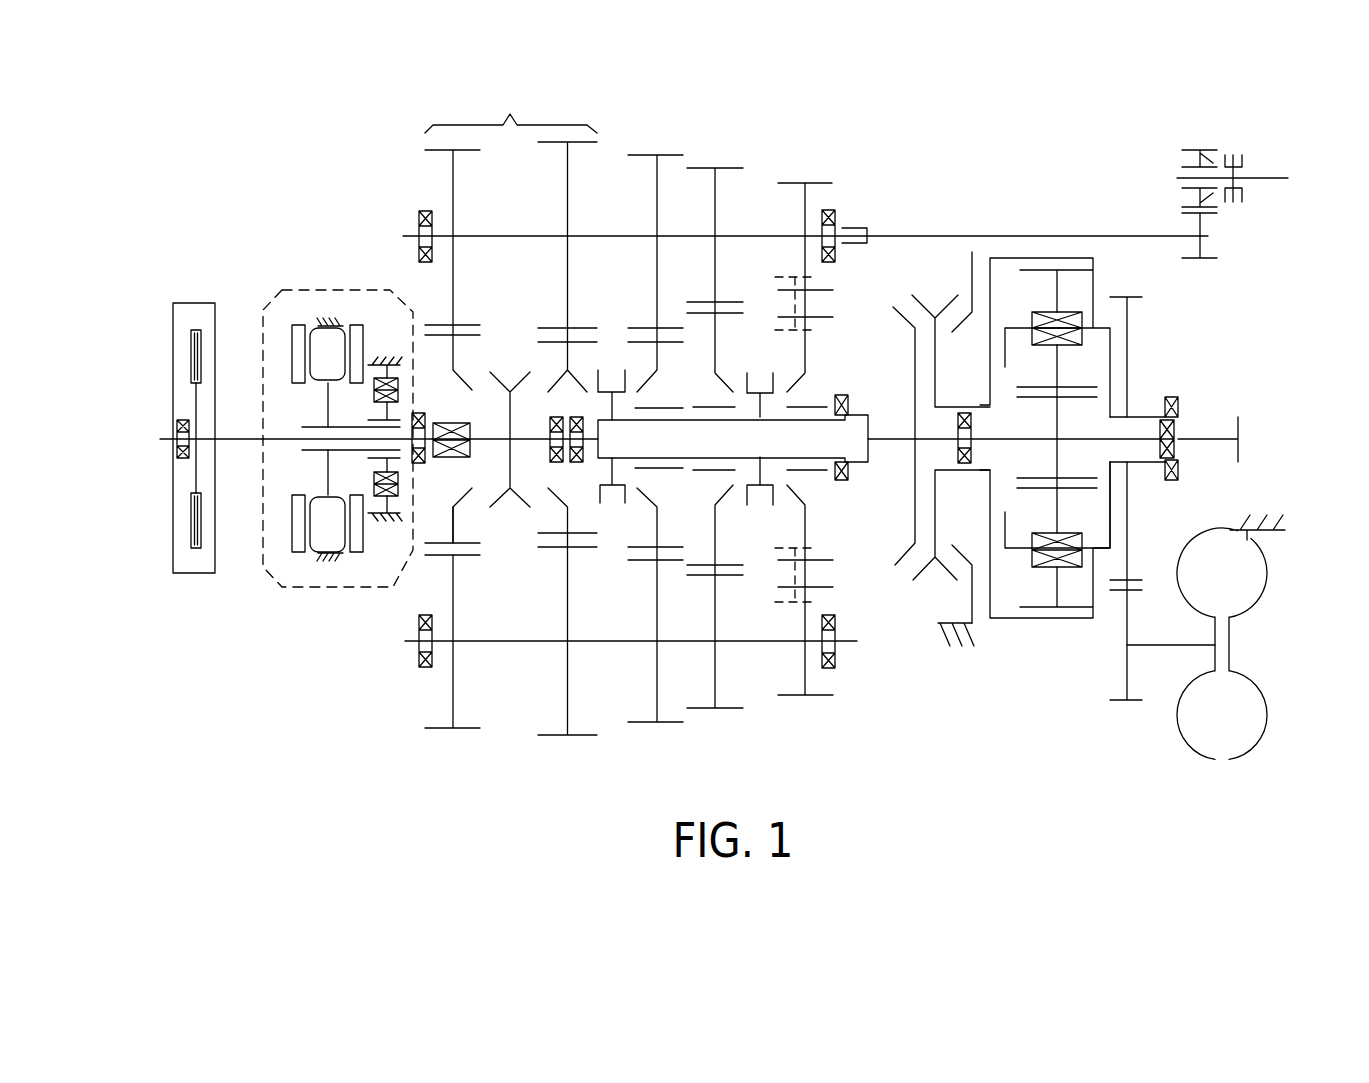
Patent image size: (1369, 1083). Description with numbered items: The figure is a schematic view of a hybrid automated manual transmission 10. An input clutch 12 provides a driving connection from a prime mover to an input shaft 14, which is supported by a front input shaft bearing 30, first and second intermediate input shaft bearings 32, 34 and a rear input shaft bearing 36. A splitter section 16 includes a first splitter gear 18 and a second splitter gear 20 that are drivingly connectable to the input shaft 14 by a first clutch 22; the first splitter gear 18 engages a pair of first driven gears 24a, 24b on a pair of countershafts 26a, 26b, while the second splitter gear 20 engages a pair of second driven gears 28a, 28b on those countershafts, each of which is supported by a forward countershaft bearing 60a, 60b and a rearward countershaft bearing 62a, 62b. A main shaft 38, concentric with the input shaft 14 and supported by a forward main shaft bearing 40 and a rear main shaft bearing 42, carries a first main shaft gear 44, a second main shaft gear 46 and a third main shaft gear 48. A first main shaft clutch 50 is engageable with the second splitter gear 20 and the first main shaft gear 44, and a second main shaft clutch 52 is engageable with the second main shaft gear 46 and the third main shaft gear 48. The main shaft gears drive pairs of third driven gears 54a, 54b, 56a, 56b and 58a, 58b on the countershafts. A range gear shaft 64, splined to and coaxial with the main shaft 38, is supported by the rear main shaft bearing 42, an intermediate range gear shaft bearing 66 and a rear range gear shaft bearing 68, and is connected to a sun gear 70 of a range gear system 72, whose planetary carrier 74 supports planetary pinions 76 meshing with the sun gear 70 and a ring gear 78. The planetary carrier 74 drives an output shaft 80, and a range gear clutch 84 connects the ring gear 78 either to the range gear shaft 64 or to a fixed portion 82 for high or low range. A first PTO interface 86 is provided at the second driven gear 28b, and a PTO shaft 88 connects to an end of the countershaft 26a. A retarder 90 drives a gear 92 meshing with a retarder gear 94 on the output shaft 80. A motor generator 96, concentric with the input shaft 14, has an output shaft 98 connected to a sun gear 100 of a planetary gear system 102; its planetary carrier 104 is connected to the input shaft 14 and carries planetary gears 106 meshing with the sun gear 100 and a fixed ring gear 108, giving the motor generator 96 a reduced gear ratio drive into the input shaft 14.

The hybrid automated manual transmission 10 is at (1029, 158).
The input clutch 12 is at (183, 603).
The input shaft 14 is at (252, 436).
The splitter section 16 is at (511, 110).
The first splitter gear 18 is at (453, 523).
The second splitter gear 20 is at (568, 354).
The first clutch 22 is at (512, 315).
The first driven gear 24a is at (452, 173).
The first driven gear 24b is at (452, 697).
The countershaft 26a is at (582, 235).
The countershaft 26b is at (587, 643).
The second driven gear 28a is at (567, 186).
The second driven gear 28b is at (567, 683).
The front input shaft bearing 30 is at (183, 460).
The first intermediate input shaft bearing 32 is at (413, 412).
The second intermediate input shaft bearing 34 is at (446, 463).
The rear input shaft bearing 36 is at (553, 428).
The main shaft 38 is at (683, 418).
The forward main shaft bearing 40 is at (587, 462).
The rear main shaft bearing 42 is at (842, 394).
The first main shaft gear 44 is at (660, 508).
The second main shaft gear 46 is at (715, 543).
The third main shaft gear 48 is at (806, 527).
The first main shaft clutch 50 is at (618, 315).
The second main shaft clutch 52 is at (761, 322).
The third driven gear 54a is at (687, 167).
The third driven gear 54b is at (658, 708).
The third driven gear 56a is at (715, 198).
The third driven gear 56b is at (715, 663).
The third driven gear 58a is at (806, 197).
The third driven gear 58b is at (806, 678).
The forward countershaft bearing 60a is at (419, 218).
The forward countershaft bearing 60b is at (421, 659).
The rearward countershaft bearing 62a is at (835, 219).
The rearward countershaft bearing 62b is at (836, 661).
The range gear shaft 64 is at (1045, 438).
The intermediate range gear shaft bearing 66 is at (972, 458).
The rear range gear shaft bearing 68 is at (1180, 452).
The sun gear 70 is at (1063, 478).
The range gear system 72 is at (1033, 672).
The planetary carrier 74 is at (1108, 516).
The planetary pinions 76 is at (1053, 282).
The ring gear 78 is at (1018, 257).
The output shaft 80 is at (1208, 438).
The fixed portion 82 is at (972, 595).
The range gear clutch 84 is at (947, 252).
The first PTO interface 86 is at (539, 785).
The PTO shaft 88 is at (1153, 236).
The retarder 90 is at (1262, 647).
The gear 92 is at (1116, 703).
The retarder gear 94 is at (1127, 342).
The motor generator 96 is at (275, 582).
The output shaft 98 is at (347, 427).
The sun gear 100 is at (377, 452).
The planetary gear system 102 is at (366, 585).
The planetary carrier 104 is at (363, 380).
The planetary gears 106 is at (332, 322).
The fixed ring gear 108 is at (387, 357).